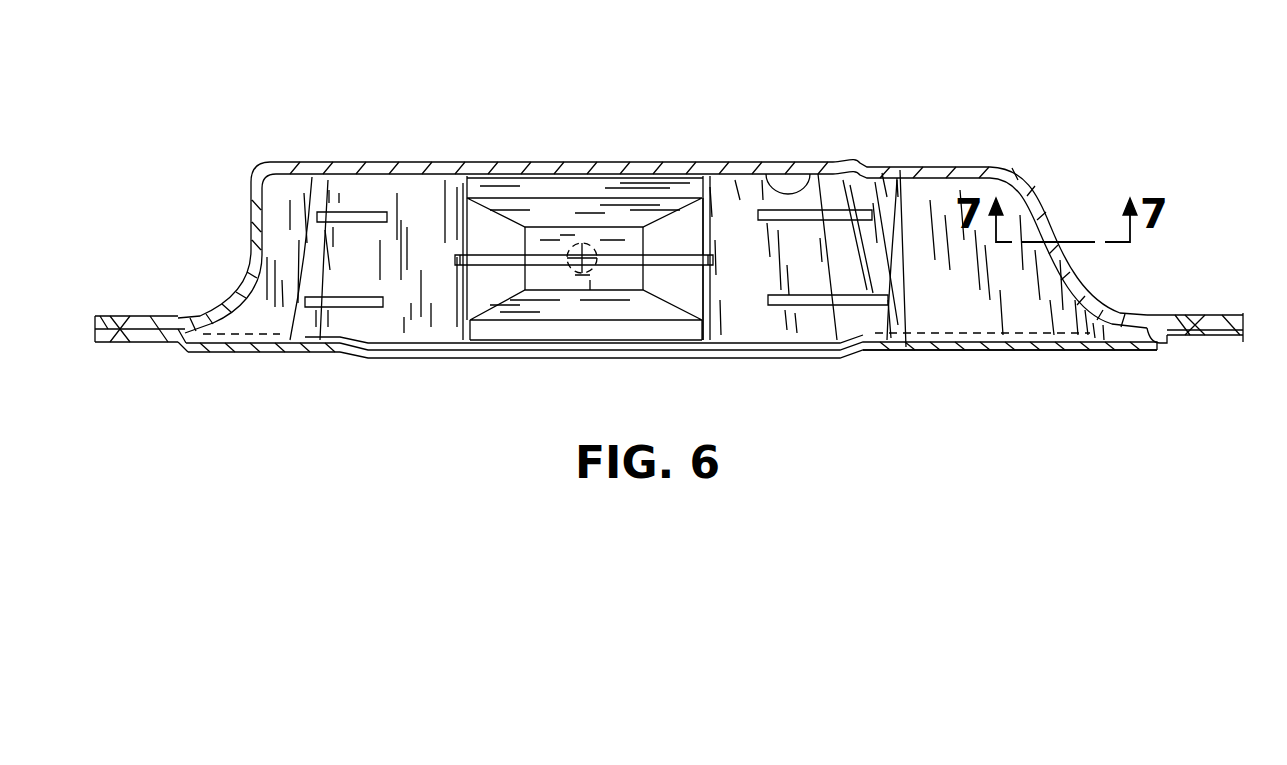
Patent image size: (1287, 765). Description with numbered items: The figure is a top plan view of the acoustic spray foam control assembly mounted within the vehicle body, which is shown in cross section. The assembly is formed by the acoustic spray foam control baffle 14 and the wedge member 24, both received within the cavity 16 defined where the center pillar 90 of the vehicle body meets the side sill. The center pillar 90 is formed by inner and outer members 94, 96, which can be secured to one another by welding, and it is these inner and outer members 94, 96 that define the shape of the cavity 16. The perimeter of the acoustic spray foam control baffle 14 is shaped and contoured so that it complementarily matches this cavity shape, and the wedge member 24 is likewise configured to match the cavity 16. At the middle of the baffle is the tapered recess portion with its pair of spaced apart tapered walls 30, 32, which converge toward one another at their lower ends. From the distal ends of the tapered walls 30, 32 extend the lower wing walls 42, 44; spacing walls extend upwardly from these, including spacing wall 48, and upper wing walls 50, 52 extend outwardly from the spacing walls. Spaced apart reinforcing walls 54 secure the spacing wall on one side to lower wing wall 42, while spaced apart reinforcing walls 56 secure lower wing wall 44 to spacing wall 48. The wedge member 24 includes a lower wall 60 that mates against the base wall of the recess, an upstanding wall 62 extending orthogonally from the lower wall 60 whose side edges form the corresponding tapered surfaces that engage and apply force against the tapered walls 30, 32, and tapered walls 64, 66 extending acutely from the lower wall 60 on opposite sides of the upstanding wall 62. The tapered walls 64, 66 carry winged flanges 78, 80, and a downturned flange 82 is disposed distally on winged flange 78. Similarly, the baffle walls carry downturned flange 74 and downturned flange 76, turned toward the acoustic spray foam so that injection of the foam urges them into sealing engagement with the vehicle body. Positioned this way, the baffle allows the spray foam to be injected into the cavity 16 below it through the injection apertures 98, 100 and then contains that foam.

The acoustic spray foam control baffle 14 is at (783, 343).
The cavity 16 is at (811, 185).
The wedge member 24 is at (546, 334).
The tapered wall 30 is at (497, 232).
The tapered wall 32 is at (687, 228).
The lower wing wall 42 is at (408, 330).
The lower wing wall 44 is at (742, 203).
The spacing wall 48 is at (887, 255).
The upper wing wall 50 is at (232, 330).
The upper wing wall 52 is at (1010, 300).
The reinforcing walls 54 is at (345, 298).
The reinforcing walls 56 is at (832, 295).
The lower wall 60 is at (540, 282).
The upstanding wall 62 is at (558, 262).
The tapered wall 64 is at (543, 212).
The tapered wall 66 is at (642, 312).
The downturned flange 74 is at (222, 302).
The downturned flange 76 is at (1053, 225).
The winged flange 78 is at (592, 185).
The winged flange 80 is at (612, 332).
The downturned flange 82 is at (550, 177).
The center pillar 90 is at (250, 214).
The inner member 94 is at (930, 353).
The outer member 96 is at (930, 166).
The injection aperture 98 is at (248, 352).
The injection aperture 100 is at (1048, 353).